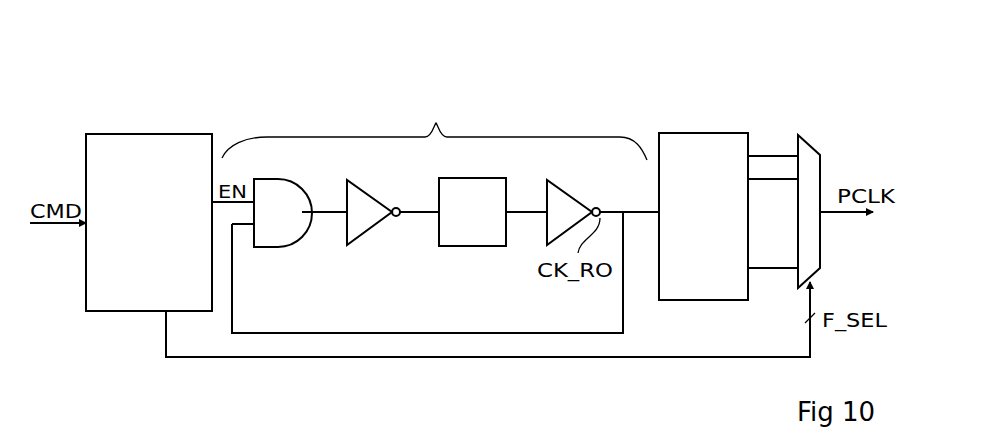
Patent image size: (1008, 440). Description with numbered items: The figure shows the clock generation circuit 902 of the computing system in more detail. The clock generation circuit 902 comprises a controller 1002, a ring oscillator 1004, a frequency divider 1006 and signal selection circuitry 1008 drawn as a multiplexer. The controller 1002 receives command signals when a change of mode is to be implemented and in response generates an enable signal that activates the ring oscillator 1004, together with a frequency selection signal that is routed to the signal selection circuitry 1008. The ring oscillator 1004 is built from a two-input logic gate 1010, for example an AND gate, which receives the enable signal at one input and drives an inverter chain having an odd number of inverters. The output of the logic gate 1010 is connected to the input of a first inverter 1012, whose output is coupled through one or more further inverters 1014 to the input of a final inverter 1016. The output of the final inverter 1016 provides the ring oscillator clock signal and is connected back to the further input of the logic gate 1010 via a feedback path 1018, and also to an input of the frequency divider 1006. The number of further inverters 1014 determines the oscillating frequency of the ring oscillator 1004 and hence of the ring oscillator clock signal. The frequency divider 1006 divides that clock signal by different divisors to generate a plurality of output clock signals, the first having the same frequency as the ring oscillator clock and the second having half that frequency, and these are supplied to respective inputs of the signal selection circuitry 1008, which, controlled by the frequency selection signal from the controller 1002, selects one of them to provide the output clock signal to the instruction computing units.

The clock generation circuit 902 is at (793, 60).
The controller 1002 is at (175, 142).
The ring oscillator 1004 is at (434, 129).
The frequency divider 1006 is at (697, 143).
The signal selection circuitry 1008 is at (808, 153).
The two-input logic gate 1010 is at (277, 237).
The first inverter 1012 is at (367, 220).
The further inverters 1014 is at (470, 235).
The final inverter 1016 is at (557, 197).
The feedback path 1018 is at (488, 333).